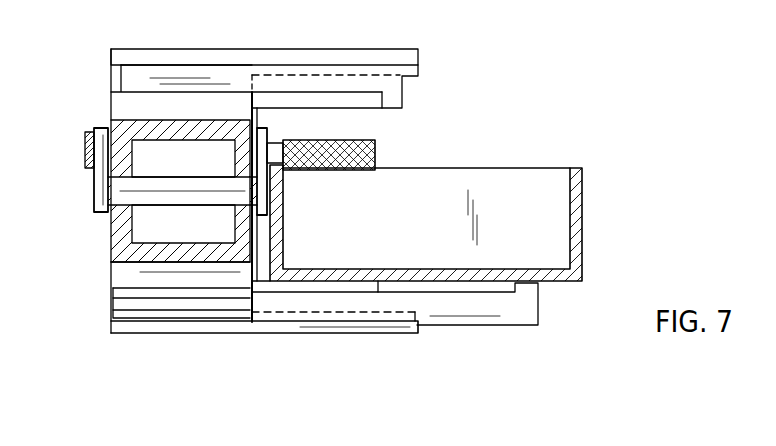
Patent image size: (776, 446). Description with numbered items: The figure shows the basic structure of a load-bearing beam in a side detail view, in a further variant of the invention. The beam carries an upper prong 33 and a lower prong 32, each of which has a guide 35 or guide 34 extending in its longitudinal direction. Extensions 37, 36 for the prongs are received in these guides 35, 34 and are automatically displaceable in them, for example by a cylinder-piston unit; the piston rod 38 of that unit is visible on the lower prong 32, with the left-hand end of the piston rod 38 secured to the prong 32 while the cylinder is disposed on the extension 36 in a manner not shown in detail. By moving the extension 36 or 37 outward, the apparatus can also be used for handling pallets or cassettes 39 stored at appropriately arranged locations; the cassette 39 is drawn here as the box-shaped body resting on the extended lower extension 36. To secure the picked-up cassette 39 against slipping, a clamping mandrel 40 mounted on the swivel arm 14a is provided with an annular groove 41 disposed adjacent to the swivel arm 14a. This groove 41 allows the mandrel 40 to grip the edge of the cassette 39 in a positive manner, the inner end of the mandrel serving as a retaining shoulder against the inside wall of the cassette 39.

The swivel arm 14a is at (260, 225).
The prong 32 is at (330, 327).
The prong 33 is at (253, 50).
The guide 34 is at (212, 325).
The guide 35 is at (335, 67).
The extension 36 is at (503, 310).
The extension 37 is at (184, 78).
The piston rod 38 is at (152, 303).
The cassette 39 is at (582, 200).
The clamping mandrel 40 is at (357, 153).
The annular groove 41 is at (273, 143).